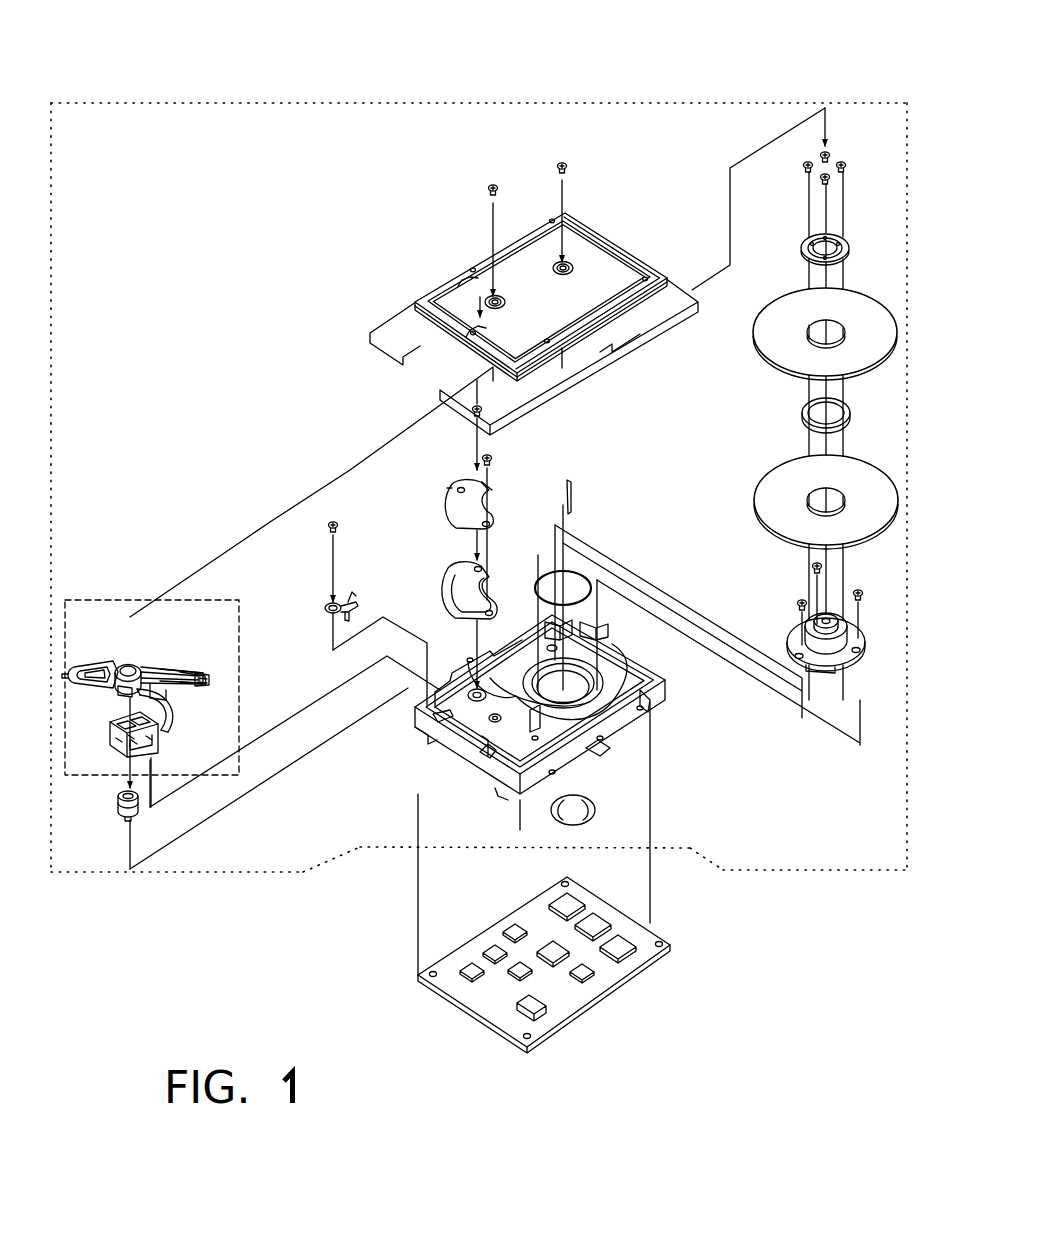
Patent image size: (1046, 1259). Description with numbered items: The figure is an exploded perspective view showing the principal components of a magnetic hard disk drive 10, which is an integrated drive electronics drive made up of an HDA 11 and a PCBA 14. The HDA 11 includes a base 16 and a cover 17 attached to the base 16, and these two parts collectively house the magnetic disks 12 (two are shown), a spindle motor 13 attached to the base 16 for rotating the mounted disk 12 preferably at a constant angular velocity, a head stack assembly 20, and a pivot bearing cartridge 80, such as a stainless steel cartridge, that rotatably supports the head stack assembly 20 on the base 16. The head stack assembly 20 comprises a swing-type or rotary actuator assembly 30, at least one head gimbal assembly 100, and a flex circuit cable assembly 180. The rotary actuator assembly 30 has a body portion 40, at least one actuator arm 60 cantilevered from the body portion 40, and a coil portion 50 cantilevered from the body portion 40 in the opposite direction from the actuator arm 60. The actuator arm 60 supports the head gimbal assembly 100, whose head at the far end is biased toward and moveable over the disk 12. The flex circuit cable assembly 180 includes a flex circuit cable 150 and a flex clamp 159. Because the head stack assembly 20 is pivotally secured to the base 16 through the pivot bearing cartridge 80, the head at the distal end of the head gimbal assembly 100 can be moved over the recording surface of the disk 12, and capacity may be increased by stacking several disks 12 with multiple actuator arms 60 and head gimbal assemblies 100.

The magnetic hard disk drive 10 is at (290, 68).
The HDA 11 is at (750, 872).
The magnetic disk 12 is at (768, 372).
The spindle motor 13 is at (793, 636).
The PCBA 14 is at (594, 999).
The base 16 is at (658, 708).
The cover 17 is at (440, 282).
The head stack assembly 20 is at (99, 600).
The rotary actuator assembly 30 is at (130, 665).
The body portion 40 is at (170, 667).
The coil portion 50 is at (110, 690).
The actuator arm 60 is at (180, 686).
The pivot bearing cartridge 80 is at (118, 806).
The head gimbal assembly 100 is at (205, 679).
The flex circuit cable 150 is at (178, 703).
The flex clamp 159 is at (125, 741).
The flex circuit cable assembly 180 is at (166, 735).